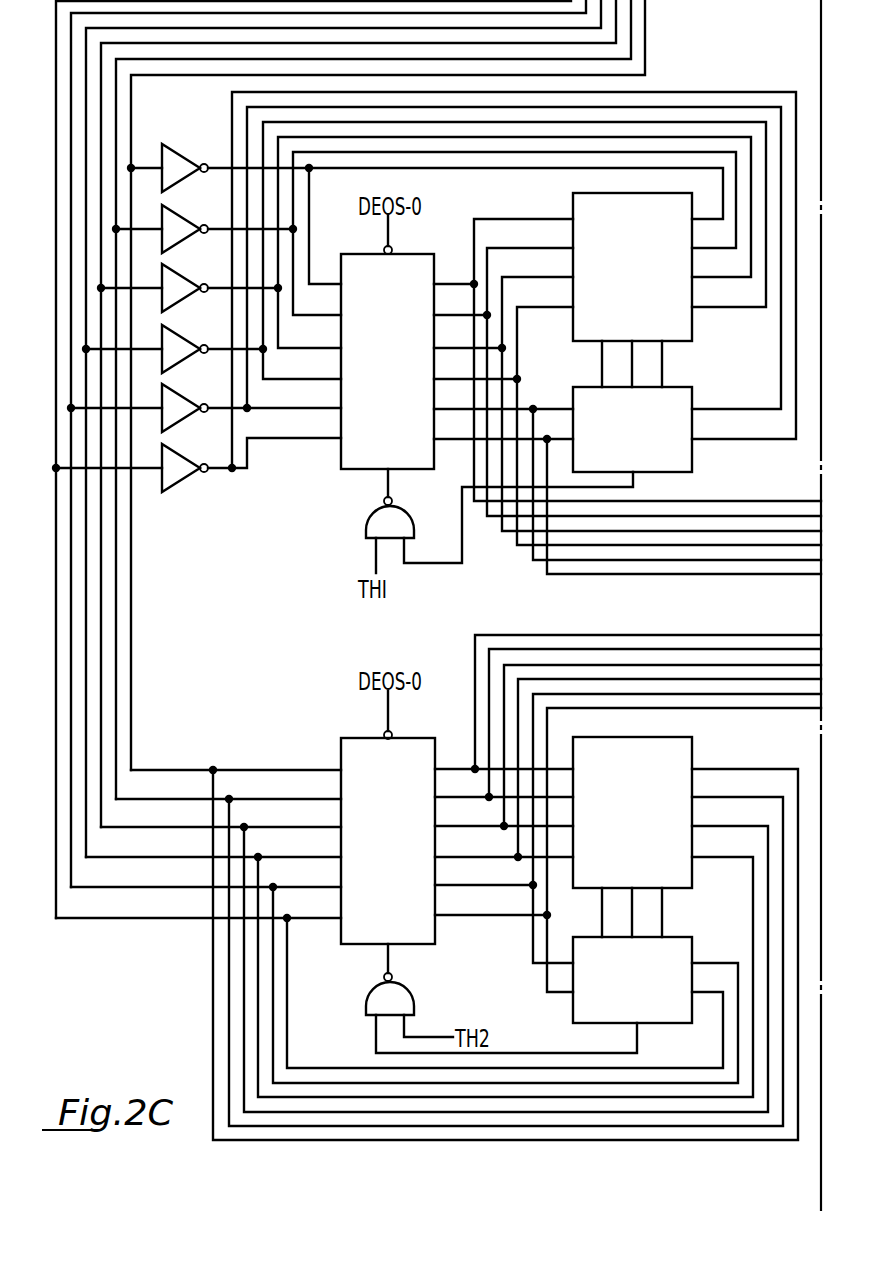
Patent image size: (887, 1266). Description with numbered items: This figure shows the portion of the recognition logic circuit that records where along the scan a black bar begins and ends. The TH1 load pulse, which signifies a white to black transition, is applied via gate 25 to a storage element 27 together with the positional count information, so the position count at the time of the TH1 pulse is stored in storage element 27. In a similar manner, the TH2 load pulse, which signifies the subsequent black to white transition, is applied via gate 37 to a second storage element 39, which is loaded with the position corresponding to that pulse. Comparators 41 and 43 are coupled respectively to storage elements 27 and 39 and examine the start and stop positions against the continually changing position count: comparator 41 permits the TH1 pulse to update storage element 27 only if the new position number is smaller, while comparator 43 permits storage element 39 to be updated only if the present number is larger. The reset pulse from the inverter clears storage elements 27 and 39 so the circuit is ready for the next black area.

The gate 25 is at (374, 521).
The storage element 27 is at (343, 463).
The gate 37 is at (372, 1003).
The second storage element 39 is at (343, 748).
The comparator 41 is at (578, 376).
The comparator 43 is at (587, 929).